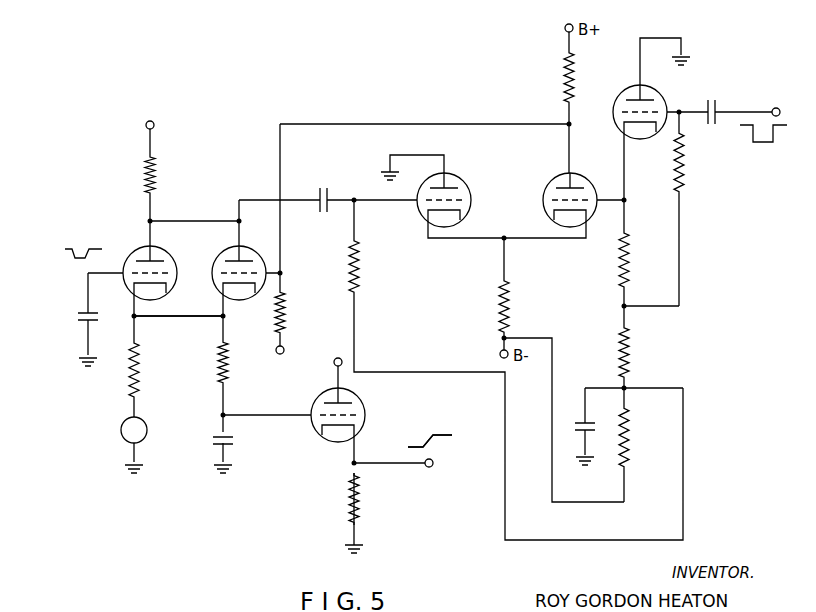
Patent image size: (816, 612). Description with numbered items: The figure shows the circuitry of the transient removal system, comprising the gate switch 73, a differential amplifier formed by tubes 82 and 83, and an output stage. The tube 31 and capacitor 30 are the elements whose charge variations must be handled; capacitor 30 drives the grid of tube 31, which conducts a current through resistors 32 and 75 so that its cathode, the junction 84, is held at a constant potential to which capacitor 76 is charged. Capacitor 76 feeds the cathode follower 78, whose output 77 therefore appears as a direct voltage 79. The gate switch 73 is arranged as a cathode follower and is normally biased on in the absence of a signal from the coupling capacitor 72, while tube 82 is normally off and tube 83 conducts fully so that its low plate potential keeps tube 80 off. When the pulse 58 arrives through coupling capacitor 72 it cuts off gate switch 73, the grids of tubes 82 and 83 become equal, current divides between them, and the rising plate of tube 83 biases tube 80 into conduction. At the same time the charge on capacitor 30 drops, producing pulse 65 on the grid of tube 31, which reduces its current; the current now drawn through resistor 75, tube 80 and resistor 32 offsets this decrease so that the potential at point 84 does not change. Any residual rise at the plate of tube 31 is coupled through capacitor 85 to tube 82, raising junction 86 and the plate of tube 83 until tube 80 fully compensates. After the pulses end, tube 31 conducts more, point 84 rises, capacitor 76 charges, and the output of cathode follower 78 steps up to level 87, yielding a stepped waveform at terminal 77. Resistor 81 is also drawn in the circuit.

The resistor 75 is at (156, 179).
The tube 80 is at (218, 261).
The pulse 65 is at (66, 252).
The tube 31 is at (177, 274).
The capacitor 30 is at (78, 316).
The junction 84 is at (134, 317).
The resistor 32 is at (140, 362).
The capacitor 76 is at (229, 441).
The resistor 81 is at (285, 310).
The capacitor 85 is at (323, 187).
The tube 82 is at (471, 190).
The tube 83 is at (589, 178).
The junction 86 is at (505, 237).
The gate switch 73 is at (618, 92).
The coupling capacitor 72 is at (711, 104).
The pulse 58 is at (777, 136).
The cathode follower 78 is at (363, 406).
The direct voltage 79 is at (408, 447).
The level 87 is at (452, 435).
The output 77 is at (432, 468).